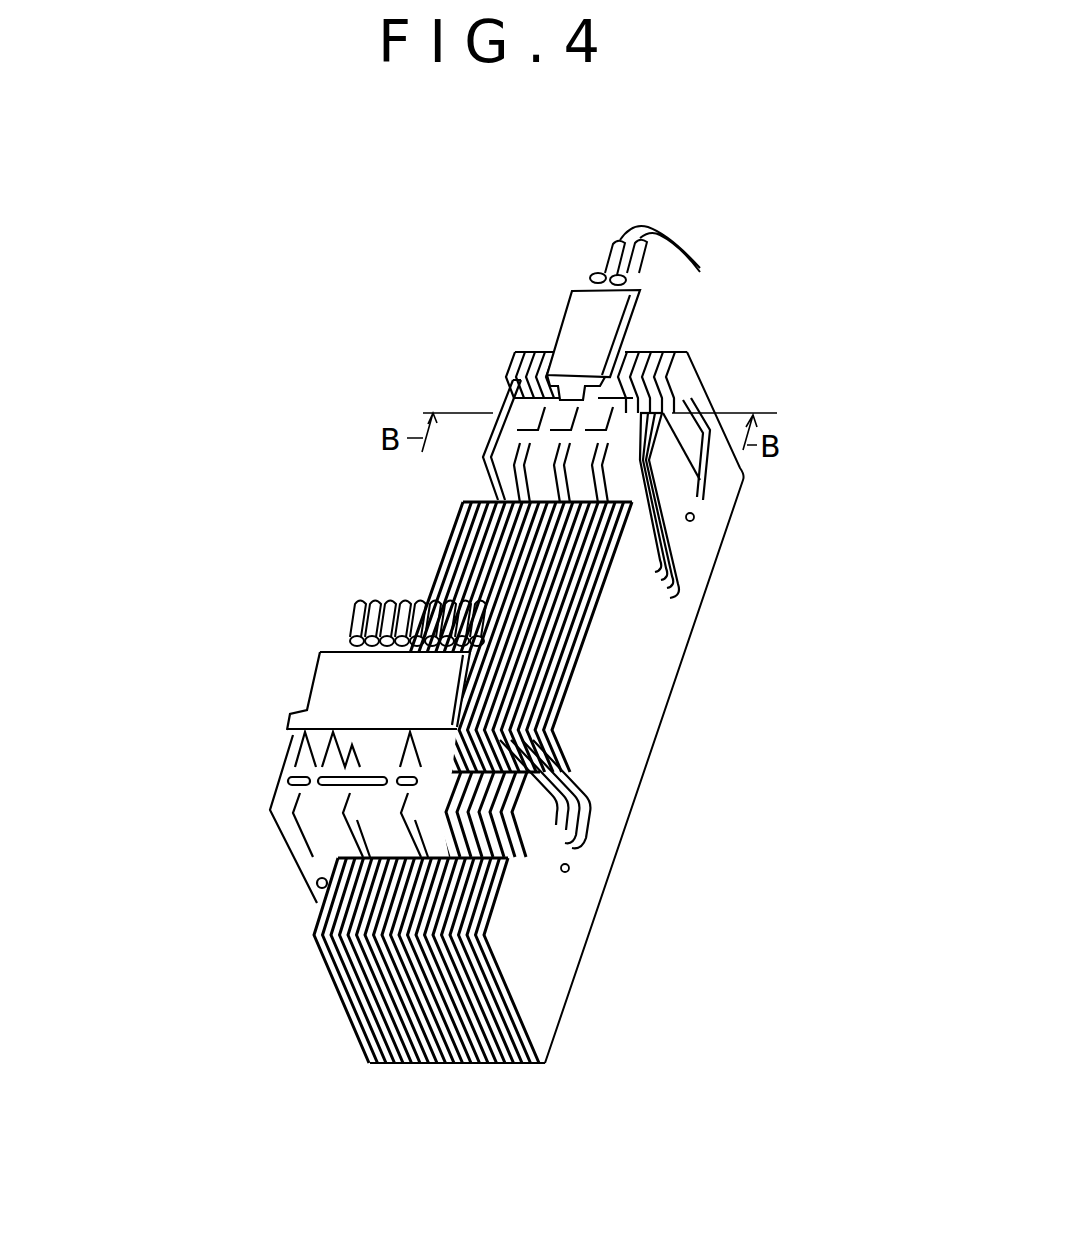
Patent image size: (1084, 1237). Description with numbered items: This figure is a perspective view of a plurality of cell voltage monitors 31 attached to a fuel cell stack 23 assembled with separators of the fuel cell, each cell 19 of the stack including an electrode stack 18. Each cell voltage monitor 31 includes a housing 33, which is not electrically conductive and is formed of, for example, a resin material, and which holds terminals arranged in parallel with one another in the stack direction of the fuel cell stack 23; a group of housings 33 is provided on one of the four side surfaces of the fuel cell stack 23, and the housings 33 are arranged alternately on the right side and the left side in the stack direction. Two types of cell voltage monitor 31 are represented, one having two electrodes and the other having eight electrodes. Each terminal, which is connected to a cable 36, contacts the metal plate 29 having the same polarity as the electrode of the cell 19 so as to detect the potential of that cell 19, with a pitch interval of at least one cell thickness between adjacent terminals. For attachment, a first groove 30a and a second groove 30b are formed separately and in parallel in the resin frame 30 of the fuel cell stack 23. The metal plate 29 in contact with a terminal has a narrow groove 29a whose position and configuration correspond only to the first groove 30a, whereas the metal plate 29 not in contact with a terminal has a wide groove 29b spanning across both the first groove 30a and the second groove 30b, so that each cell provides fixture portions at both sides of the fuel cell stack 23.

The electrode stack 18 is at (896, 472).
The cell 19 is at (363, 1088).
The fuel cell stack 23 is at (507, 637).
The metal plate 29 is at (667, 407).
The narrow groove 29a is at (640, 553).
The wide groove 29b is at (692, 521).
The resin frame 30 is at (665, 465).
The first groove 30a is at (680, 557).
The second groove 30b is at (700, 428).
The cell voltage monitor 31 is at (380, 470).
The housing 33 is at (300, 853).
The cable 36 is at (410, 602).